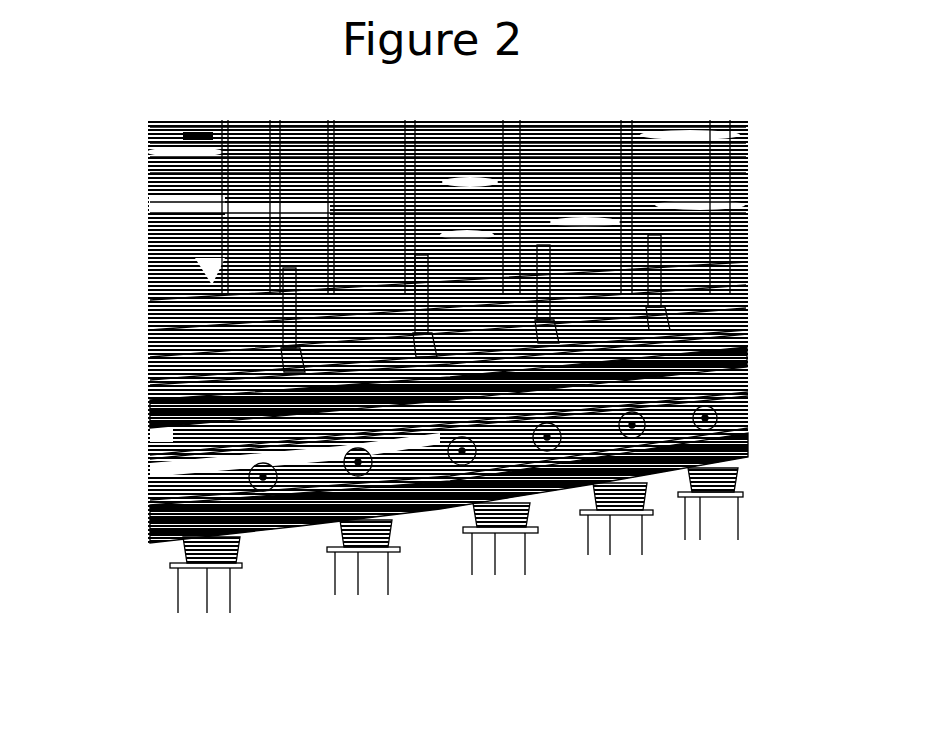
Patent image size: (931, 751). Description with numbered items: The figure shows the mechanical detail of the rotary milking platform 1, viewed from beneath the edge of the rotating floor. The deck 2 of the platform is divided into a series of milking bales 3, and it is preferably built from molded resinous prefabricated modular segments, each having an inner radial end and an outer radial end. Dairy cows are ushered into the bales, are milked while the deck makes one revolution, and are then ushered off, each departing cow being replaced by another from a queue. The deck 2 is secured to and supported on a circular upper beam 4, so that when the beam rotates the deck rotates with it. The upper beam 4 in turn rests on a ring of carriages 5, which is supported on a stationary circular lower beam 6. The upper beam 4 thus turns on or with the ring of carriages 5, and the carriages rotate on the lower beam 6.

The milking platform 1 is at (122, 215).
The deck 2 is at (193, 398).
The milking bales 3 is at (604, 296).
The upper beam 4 is at (160, 459).
The ring of carriages 5 is at (292, 493).
The lower beam 6 is at (465, 490).